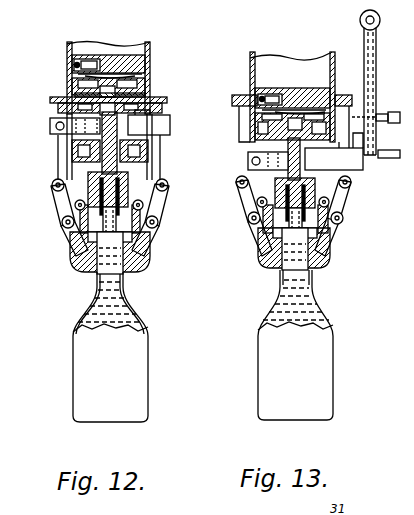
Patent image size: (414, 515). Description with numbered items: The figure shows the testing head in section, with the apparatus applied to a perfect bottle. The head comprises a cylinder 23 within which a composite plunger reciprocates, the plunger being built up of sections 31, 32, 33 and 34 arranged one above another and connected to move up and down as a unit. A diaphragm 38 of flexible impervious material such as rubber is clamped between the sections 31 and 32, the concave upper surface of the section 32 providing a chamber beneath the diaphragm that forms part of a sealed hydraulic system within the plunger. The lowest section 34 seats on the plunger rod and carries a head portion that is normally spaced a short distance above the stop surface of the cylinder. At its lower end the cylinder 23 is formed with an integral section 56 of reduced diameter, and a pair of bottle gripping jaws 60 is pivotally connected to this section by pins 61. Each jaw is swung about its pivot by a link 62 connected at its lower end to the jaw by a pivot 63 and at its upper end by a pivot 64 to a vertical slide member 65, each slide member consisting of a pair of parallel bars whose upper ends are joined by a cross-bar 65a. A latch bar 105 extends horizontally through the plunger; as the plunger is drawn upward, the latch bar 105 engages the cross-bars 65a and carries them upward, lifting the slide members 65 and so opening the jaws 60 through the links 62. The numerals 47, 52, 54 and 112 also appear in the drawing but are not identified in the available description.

In FIG. 12, the cylinder 23 is at (74, 66).
In FIG. 13, the cylinder 23 is at (282, 170).
In FIG. 12, the plunger section 31 is at (149, 55).
In FIG. 12, the plunger section 32 is at (147, 75).
In FIG. 12, the plunger section 33 is at (155, 92).
In FIG. 12, the plunger section 34 is at (140, 148).
In FIG. 13, the diaphragm 38 is at (305, 108).
In FIG. 13, the spout 47 is at (282, 273).
In FIG. 12, the bottle 52 is at (145, 379).
In FIG. 13, the bottle neck 54 is at (318, 280).
In FIG. 12, the reduced-diameter section 56 is at (150, 212).
In FIG. 12, the bottle gripping jaws 60 is at (82, 258).
In FIG. 13, the bottle gripping jaws 60 is at (330, 256).
In FIG. 12, the pins 61 is at (75, 208).
In FIG. 12, the links 62 is at (66, 200).
In FIG. 12, the pivot 63 is at (63, 223).
In FIG. 12, the pivot 64 is at (52, 186).
In FIG. 12, the vertical slide member 65 is at (67, 158).
In FIG. 13, the vertical slide member 65 is at (383, 100).
In FIG. 12, the cross-bar 65a is at (52, 100).
In FIG. 12, the latch bar 105 is at (168, 125).
In FIG. 13, the latch bar 105 is at (348, 170).
In FIG. 13, the lever 112 is at (371, 53).